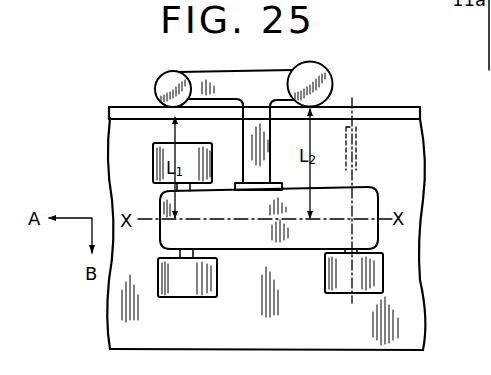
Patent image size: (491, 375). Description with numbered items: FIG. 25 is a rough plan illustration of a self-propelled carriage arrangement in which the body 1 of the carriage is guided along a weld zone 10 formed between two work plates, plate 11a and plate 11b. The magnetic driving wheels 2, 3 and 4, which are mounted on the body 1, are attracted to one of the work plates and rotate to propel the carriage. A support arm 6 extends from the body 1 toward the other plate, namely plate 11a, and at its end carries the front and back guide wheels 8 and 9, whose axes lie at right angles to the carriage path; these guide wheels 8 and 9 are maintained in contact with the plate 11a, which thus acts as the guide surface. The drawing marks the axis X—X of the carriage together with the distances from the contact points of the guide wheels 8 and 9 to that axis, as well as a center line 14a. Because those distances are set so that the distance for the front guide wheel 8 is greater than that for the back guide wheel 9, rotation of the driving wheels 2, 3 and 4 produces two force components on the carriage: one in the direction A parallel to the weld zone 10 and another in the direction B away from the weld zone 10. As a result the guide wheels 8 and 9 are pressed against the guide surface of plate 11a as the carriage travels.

The body 1 is at (380, 204).
The magnetic driving wheel 2 is at (158, 282).
The magnetic driving wheel 3 is at (153, 156).
The magnetic driving wheel 4 is at (383, 270).
The support arm 6 is at (247, 86).
The front guide wheel 8 is at (164, 78).
The back guide wheel 9 is at (328, 69).
The weld zone 10 is at (266, 234).
The plate 11a is at (401, 102).
The lower edge 11b is at (423, 314).
The center line 14a is at (356, 133).